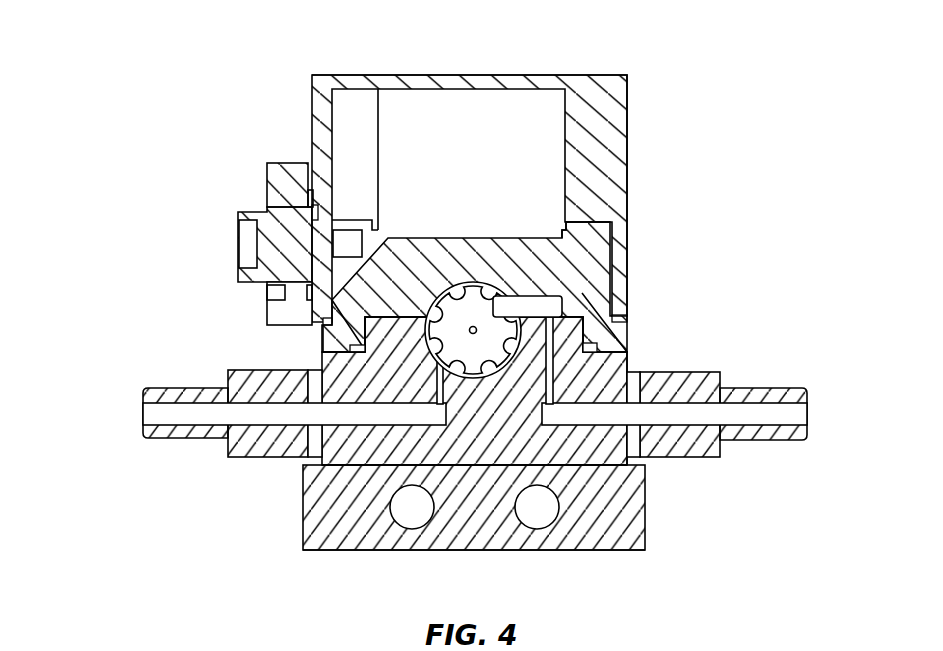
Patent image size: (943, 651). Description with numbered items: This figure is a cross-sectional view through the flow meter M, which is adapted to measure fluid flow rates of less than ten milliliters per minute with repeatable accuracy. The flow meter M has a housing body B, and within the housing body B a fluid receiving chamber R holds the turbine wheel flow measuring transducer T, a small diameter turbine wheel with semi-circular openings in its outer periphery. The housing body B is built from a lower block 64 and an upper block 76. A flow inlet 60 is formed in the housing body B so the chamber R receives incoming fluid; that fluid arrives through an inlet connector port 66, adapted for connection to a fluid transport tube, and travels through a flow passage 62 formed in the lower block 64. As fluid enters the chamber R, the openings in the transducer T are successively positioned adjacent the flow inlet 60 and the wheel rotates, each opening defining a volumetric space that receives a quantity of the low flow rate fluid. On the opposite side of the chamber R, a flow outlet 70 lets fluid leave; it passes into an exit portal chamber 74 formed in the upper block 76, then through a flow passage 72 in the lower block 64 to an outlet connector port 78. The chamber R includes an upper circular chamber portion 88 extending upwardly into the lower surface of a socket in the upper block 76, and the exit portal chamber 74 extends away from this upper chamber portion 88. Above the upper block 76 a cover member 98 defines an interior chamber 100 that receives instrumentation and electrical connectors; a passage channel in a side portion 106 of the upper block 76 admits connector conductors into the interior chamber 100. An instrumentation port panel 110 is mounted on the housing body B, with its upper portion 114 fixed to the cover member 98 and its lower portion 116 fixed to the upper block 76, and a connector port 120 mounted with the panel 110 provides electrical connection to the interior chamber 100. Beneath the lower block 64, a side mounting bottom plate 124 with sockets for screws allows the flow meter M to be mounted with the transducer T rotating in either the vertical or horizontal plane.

The flow inlet 60 is at (278, 457).
The flow passage 62 is at (405, 448).
The lower block 64 is at (325, 515).
The inlet connector port 66 is at (177, 440).
The flow outlet 70 is at (507, 283).
The flow passage 72 is at (590, 413).
The exit portal chamber 74 is at (540, 303).
The upper block 76 is at (567, 222).
The outlet connector port 78 is at (773, 440).
The upper circular chamber portion 88 is at (350, 327).
The cover member 98 is at (633, 130).
The interior chamber 100 is at (527, 100).
The side portion 106 is at (267, 300).
The instrumentation port panel 110 is at (266, 163).
The upper portion 114 is at (292, 163).
The lower portion 116 is at (267, 320).
The connector port 120 is at (238, 272).
The side mounting bottom plate 124 is at (636, 510).
The fluid receiving chamber R is at (292, 347).
The housing body B is at (676, 334).
The flow meter M is at (702, 56).
The turbine wheel flow measuring transducer T is at (395, 550).